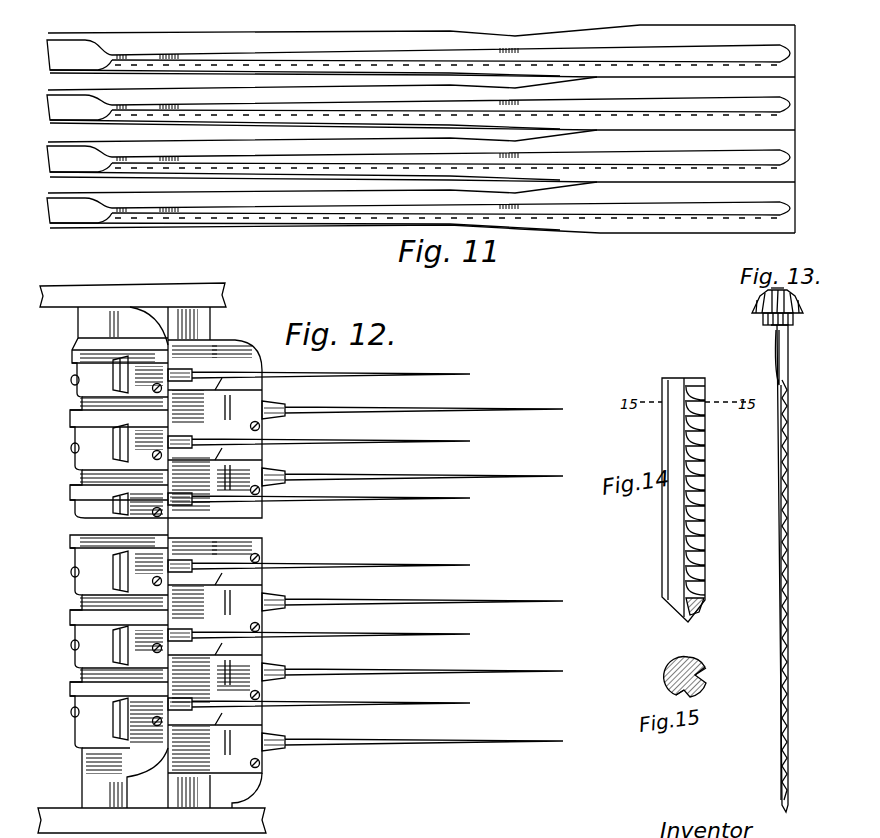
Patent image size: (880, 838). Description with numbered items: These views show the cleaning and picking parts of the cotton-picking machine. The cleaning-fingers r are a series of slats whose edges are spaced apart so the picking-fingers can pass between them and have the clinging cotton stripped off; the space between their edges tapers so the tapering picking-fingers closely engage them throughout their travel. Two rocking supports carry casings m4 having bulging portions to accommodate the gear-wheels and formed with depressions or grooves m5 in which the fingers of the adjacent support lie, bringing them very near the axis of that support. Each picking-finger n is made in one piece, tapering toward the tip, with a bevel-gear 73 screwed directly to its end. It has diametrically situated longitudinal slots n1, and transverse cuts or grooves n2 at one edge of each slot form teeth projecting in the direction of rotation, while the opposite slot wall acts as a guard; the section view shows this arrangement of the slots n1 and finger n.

In FIG. 11, the cleaning-fingers r is at (57, 110).
In FIG. 12, the casings m4 is at (78, 362).
In FIG. 12, the depressions or grooves m5 is at (80, 404).
In FIG. 13, the bevel-gear 73 is at (757, 302).
In FIG. 13, the picking-fingers n is at (788, 548).
In FIG. 15, the picking-fingers n is at (708, 677).
In FIG. 14, the longitudinal slots n1 is at (680, 568).
In FIG. 15, the longitudinal slots n1 is at (700, 663).
In FIG. 14, the transverse cuts or grooves n2 is at (700, 537).